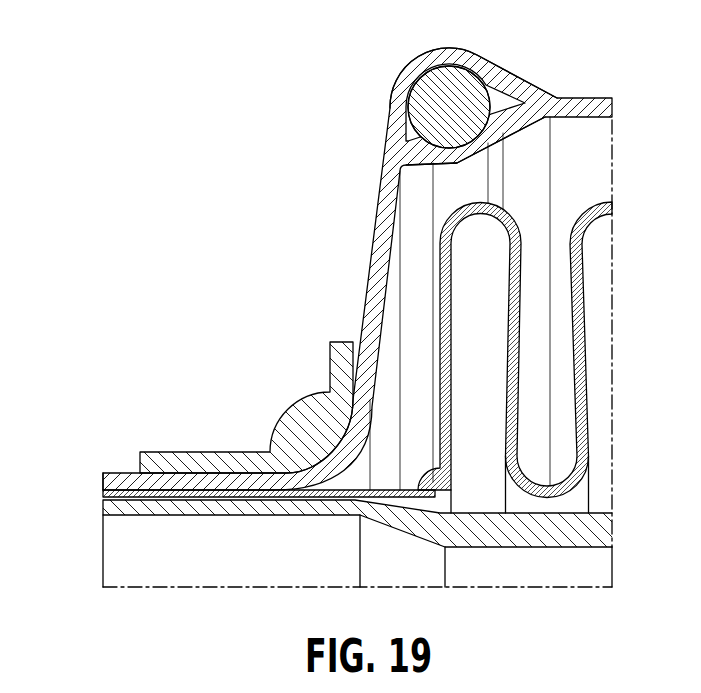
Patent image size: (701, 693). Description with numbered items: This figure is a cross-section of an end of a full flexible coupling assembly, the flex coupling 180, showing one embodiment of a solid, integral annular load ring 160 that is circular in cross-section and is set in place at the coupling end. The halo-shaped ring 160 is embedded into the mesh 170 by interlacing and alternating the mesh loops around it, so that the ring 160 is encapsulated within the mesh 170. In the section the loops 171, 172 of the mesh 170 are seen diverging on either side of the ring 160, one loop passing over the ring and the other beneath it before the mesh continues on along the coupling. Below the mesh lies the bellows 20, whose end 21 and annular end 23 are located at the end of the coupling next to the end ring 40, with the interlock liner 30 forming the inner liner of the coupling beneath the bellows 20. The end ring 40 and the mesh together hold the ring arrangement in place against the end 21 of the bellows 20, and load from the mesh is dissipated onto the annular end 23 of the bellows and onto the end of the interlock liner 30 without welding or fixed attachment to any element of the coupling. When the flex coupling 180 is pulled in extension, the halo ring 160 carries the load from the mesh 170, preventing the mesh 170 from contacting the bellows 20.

The bellows 20 is at (506, 214).
The end of bellows 21 is at (450, 368).
The annular end of bellows 23 is at (330, 498).
The interlock liner 30 is at (105, 507).
The end ring 40 is at (198, 456).
The annular load ring 160 is at (406, 97).
The mesh 170 is at (371, 249).
The mesh loop 171 is at (452, 54).
The mesh loop 172 is at (460, 163).
The flex coupling 180 is at (268, 187).